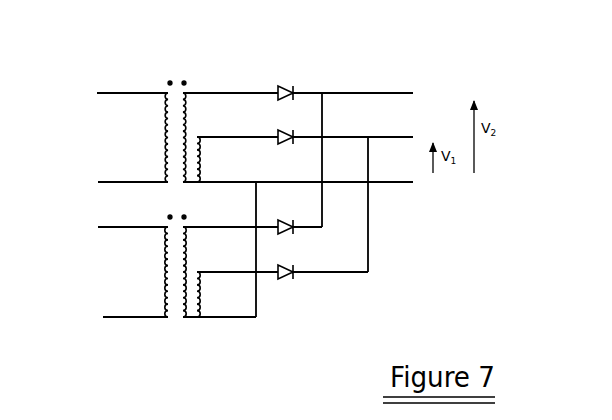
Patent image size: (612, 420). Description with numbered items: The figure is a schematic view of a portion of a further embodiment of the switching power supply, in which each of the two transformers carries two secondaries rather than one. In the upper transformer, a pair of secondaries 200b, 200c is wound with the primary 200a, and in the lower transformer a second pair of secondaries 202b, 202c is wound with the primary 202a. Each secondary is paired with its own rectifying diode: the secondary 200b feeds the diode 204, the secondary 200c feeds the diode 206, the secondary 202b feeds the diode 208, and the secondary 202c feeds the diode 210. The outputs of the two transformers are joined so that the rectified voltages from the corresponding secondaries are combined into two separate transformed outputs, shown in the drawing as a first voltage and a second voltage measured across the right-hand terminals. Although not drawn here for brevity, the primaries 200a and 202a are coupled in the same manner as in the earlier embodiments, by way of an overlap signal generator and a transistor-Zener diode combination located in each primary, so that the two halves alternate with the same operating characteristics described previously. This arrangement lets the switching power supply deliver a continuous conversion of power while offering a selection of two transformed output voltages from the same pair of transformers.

The primary 200a is at (166, 135).
The secondary 200b is at (190, 81).
The secondary 200c is at (204, 128).
The primary 202a is at (172, 331).
The secondary 202b is at (188, 330).
The secondary 202c is at (204, 325).
The diode 204 is at (289, 78).
The diode 206 is at (298, 125).
The diode 208 is at (290, 237).
The diode 210 is at (290, 282).